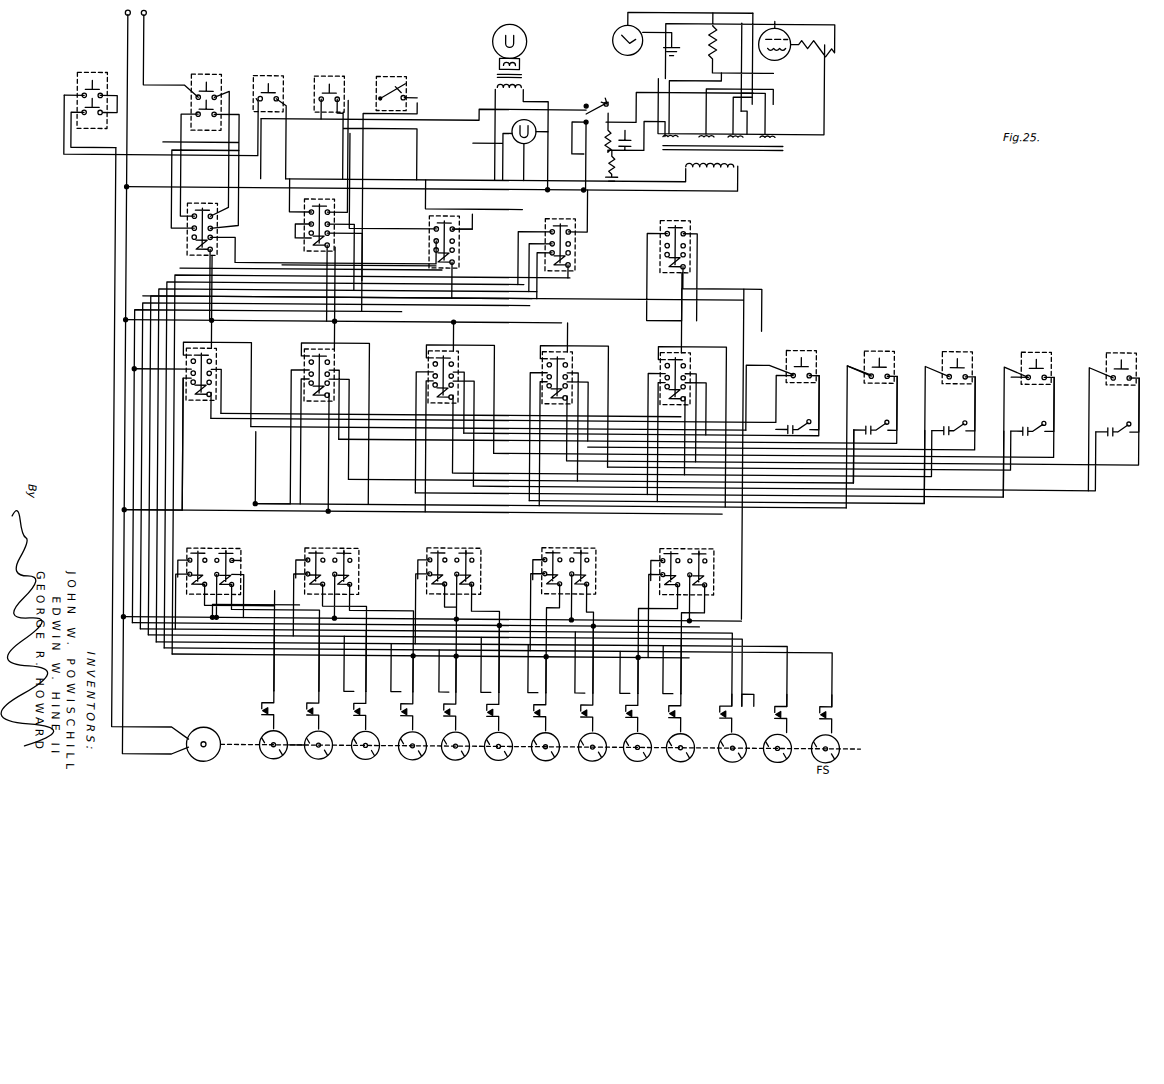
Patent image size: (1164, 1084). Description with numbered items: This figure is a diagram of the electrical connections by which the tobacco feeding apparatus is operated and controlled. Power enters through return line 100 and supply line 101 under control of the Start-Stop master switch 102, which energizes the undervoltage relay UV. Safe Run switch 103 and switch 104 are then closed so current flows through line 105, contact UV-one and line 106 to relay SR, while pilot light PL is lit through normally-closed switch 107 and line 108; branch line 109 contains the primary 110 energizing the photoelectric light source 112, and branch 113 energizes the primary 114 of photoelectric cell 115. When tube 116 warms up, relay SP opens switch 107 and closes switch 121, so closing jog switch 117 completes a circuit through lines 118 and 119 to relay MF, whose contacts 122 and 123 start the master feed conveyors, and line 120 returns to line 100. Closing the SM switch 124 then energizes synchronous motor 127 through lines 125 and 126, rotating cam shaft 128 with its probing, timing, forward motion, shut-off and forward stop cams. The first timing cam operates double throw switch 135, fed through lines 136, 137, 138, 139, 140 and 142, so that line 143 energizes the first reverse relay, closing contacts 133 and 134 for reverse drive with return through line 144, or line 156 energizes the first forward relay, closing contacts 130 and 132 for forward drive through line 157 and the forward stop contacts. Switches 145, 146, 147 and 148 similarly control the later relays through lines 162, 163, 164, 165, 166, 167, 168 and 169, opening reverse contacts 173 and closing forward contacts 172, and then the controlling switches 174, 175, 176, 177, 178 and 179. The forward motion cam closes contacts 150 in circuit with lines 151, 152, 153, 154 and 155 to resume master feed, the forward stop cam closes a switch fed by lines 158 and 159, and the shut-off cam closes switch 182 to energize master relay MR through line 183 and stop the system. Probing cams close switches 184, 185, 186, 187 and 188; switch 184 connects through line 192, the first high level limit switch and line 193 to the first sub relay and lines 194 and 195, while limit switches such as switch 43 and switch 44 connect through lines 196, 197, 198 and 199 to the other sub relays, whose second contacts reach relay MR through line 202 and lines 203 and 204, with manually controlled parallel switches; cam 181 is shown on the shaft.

The return line 100 is at (124, 41).
The supply line 101 is at (140, 38).
The master switch 102 is at (226, 72).
The Safe Run switch 103 is at (404, 90).
The switch SW 104 is at (290, 70).
The line 105 is at (182, 186).
The line 106 is at (232, 226).
The normally-closed switch 107 is at (626, 147).
The line 108 is at (410, 190).
The branch line 109 is at (497, 150).
The transformer primary 110 is at (524, 82).
The photoelectric light beam source 112 is at (523, 40).
The branch line 113 is at (640, 182).
The primary 114 is at (724, 166).
The photoelectric cell 115 is at (644, 56).
The photoelectric cell tube 116 is at (774, 26).
The jog switch 117 is at (348, 74).
The line 118 is at (290, 112).
The line 119 is at (434, 121).
The line 120 is at (680, 313).
The switch 121 is at (602, 102).
The contact 122 is at (452, 230).
The contact 123 is at (426, 230).
The selector switch 124 is at (74, 90).
The line 125 is at (144, 156).
The line 126 is at (113, 268).
The synchronous motor 127 is at (204, 732).
The cam shaft 128 is at (856, 728).
The contact 130 is at (188, 549).
The contact 132 is at (222, 549).
The contact 133 is at (238, 556).
The contact 134 is at (242, 570).
The double throw switch 135 is at (308, 722).
The line 136 is at (220, 98).
The line 137 is at (226, 184).
The line 138 is at (382, 264).
The line 139 is at (518, 302).
The line 140 is at (282, 314).
The line 142 is at (338, 688).
The line 143 is at (254, 388).
The return line 144 is at (152, 654).
The switch 145 is at (403, 722).
The switch 146 is at (500, 722).
The switch 147 is at (586, 722).
The switch 148 is at (684, 718).
The switch contacts 150 is at (724, 692).
The line 151 is at (158, 274).
The line 152 is at (482, 266).
The line 153 is at (366, 170).
The line 154 is at (416, 196).
The line 155 is at (519, 309).
The line 156 is at (320, 684).
The line 157 is at (183, 594).
The line 158 is at (160, 292).
The line 159 is at (602, 286).
The line 162 is at (380, 688).
The line 163 is at (426, 688).
The line 164 is at (472, 688).
The line 165 is at (516, 688).
The line 166 is at (562, 688).
The line 167 is at (612, 682).
The line 168 is at (654, 688).
The line 169 is at (712, 702).
The CF-2 contacts 172 is at (304, 557).
The CR-2 contacts 173 is at (348, 549).
The controlling switch 174 is at (428, 549).
The controlling switch 175 is at (464, 557).
The controlling switch 176 is at (546, 549).
The controlling switch 177 is at (584, 549).
The controlling switch 178 is at (662, 549).
The controlling switch 179 is at (700, 549).
The cam 181 is at (308, 750).
The switch 182 is at (768, 684).
The line 183 is at (174, 284).
The switch 184 is at (263, 710).
The switch 185 is at (364, 720).
The switch 186 is at (444, 718).
The switch 187 is at (534, 718).
The switch 188 is at (628, 718).
The line 192 is at (254, 460).
The line 193 is at (618, 416).
The line 194 is at (182, 460).
The line 195 is at (124, 500).
The line 196 is at (828, 424).
The line 197 is at (906, 440).
The line 198 is at (984, 440).
The line 199 is at (1066, 454).
The line 202 is at (126, 354).
The line 203 is at (336, 494).
The line 204 is at (888, 386).
The high level limit switch 43 is at (887, 400).
The limit switch 44 is at (1042, 400).